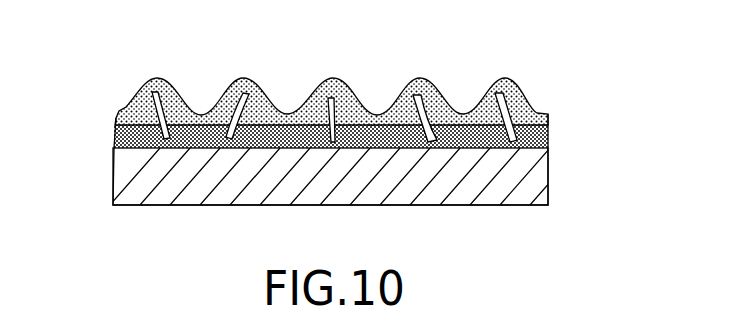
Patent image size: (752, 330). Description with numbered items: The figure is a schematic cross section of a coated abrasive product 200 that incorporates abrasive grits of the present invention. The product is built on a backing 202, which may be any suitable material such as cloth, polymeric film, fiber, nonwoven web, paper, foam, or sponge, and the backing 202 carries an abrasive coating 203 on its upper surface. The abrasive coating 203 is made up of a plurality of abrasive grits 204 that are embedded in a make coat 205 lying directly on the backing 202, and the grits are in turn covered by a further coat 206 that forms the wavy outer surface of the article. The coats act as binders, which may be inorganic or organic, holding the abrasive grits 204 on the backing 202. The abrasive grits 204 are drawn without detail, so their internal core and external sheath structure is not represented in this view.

The coated abrasive product 200 is at (431, 54).
The backing 202 is at (204, 192).
The abrasive coating 203 is at (558, 130).
The abrasive grits 204 is at (408, 98).
The make coat 205 is at (114, 133).
The make coat 206 is at (137, 107).